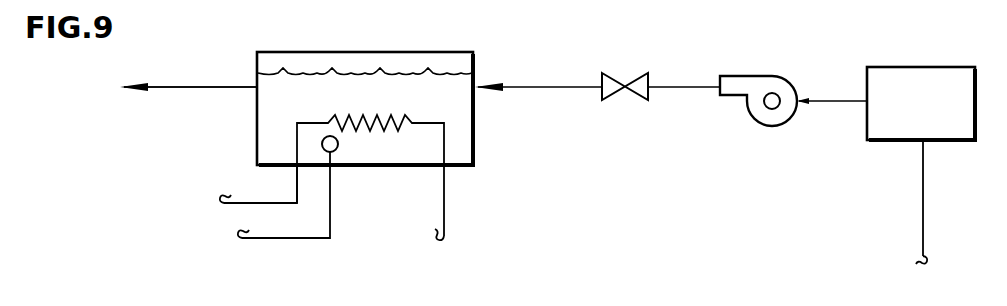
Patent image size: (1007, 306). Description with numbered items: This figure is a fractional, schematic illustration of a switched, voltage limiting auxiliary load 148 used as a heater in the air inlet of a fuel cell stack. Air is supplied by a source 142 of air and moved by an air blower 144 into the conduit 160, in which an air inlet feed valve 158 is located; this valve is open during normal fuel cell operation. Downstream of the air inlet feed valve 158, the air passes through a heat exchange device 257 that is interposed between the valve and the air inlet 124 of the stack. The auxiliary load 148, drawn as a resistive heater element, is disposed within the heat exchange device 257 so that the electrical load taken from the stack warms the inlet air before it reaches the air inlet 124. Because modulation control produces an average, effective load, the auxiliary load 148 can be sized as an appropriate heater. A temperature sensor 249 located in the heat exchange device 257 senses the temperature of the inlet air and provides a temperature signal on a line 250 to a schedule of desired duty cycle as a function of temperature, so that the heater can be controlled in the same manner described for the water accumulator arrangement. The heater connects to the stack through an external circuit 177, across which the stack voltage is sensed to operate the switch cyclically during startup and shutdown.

The air inlet 124 is at (121, 88).
The source of air 142 is at (922, 67).
The air blower 144 is at (758, 83).
The auxiliary load 148 is at (373, 118).
The air inlet feed valve 158 is at (625, 84).
The conduit 160 is at (167, 88).
The external circuit 177 is at (237, 203).
The temperature sensor 249 is at (337, 148).
The line 250 is at (252, 238).
The heat exchange device 257 is at (413, 52).